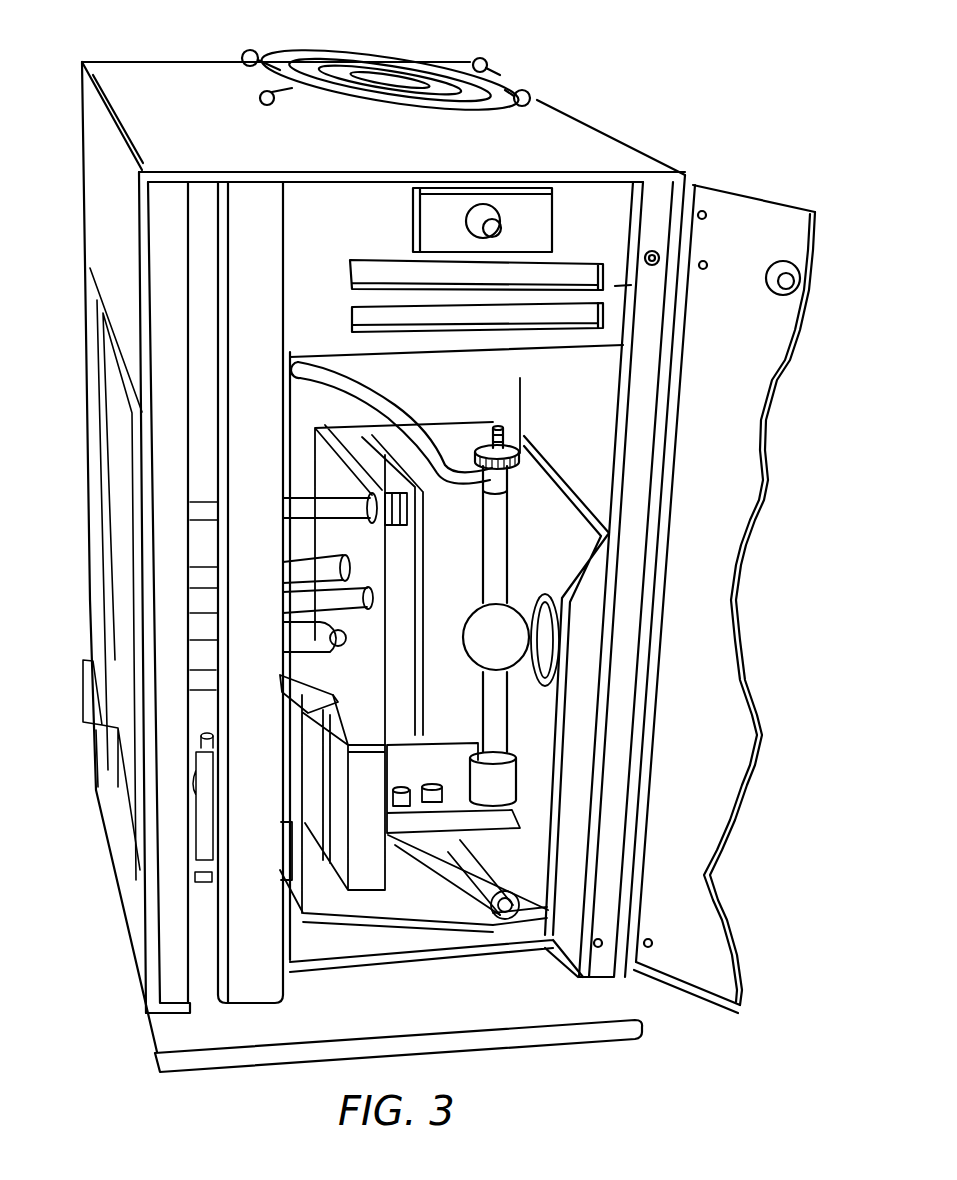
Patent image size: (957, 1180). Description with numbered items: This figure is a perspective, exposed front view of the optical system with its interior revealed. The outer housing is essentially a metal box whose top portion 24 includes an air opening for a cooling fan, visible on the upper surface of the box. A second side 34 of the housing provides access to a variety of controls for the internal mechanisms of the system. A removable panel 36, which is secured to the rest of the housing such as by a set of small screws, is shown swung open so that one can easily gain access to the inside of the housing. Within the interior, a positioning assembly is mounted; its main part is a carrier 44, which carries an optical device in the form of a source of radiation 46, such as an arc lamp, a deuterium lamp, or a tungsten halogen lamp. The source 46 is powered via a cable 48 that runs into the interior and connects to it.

The top portion 24 is at (170, 85).
The second side 34 is at (108, 153).
The removable panel 36 is at (735, 460).
The carrier 44 is at (474, 427).
The source of radiation 46 is at (483, 605).
The cable 48 is at (370, 400).